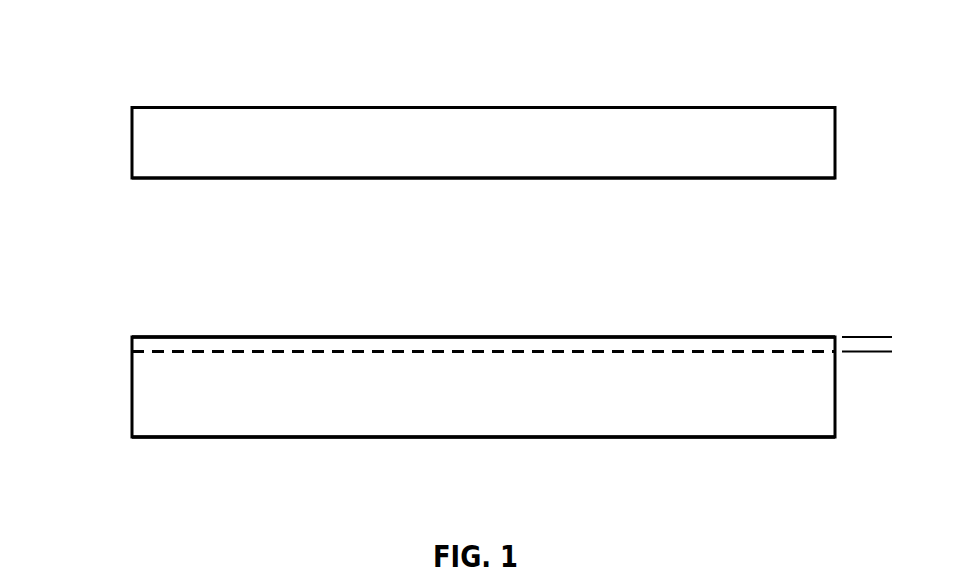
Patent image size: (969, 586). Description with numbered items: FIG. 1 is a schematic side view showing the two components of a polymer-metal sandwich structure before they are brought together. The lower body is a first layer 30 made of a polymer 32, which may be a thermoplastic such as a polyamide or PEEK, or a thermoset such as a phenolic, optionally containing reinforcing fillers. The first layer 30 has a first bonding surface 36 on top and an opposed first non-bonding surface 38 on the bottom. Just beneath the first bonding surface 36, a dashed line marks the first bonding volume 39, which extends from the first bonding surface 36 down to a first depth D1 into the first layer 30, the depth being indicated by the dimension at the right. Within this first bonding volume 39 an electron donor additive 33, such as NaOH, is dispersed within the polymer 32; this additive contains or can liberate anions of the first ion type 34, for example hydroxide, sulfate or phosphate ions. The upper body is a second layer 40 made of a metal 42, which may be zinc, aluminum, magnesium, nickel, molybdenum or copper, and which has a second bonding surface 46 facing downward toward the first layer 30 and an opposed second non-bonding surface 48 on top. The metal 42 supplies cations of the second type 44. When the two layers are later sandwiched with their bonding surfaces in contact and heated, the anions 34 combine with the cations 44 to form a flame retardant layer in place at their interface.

The first layer 30 is at (154, 387).
The polymer 32 is at (483, 301).
The electron donor additive 33 is at (403, 347).
The anions of the first ion type 34 is at (675, 410).
The first bonding surface 36 is at (213, 337).
The first non-bonding surface 38 is at (222, 437).
The first bonding volume 39 is at (368, 347).
The second layer 40 is at (154, 144).
The metal 42 is at (483, 79).
The cations of the second type 44 is at (402, 125).
The second bonding surface 46 is at (730, 178).
The second non-bonding surface 48 is at (698, 107).
The first depth D1 is at (877, 397).